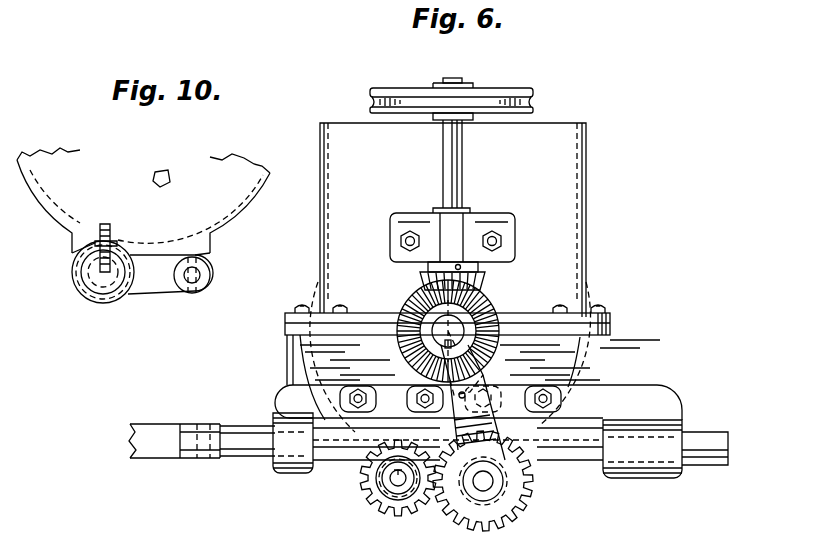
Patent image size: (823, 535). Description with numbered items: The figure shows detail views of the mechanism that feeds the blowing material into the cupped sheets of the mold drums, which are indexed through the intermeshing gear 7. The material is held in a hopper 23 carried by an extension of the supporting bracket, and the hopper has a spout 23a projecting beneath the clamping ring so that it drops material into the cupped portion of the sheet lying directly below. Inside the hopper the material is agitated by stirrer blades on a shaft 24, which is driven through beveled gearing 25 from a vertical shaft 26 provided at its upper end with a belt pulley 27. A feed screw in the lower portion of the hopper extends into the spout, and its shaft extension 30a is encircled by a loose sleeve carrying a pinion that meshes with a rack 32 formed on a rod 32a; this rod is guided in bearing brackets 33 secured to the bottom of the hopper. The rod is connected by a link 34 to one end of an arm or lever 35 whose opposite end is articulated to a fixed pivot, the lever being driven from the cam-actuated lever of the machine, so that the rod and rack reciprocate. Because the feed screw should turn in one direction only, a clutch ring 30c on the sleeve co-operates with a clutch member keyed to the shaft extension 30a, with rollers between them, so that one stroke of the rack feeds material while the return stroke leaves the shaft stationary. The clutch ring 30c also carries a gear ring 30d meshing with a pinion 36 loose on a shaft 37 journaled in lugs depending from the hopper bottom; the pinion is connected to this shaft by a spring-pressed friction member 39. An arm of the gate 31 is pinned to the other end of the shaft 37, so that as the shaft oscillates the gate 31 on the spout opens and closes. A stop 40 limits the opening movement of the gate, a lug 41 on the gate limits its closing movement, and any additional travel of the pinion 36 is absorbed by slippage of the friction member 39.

In FIG. 6, the intermeshing gear 7 is at (453, 95).
In FIG. 10, the hopper 23 is at (53, 167).
In FIG. 6, the hopper 23 is at (478, 277).
In FIG. 10, the spout 23a is at (75, 271).
In FIG. 6, the shaft 24 is at (458, 328).
In FIG. 6, the beveled gearing 25 is at (425, 280).
In FIG. 6, the shaft 26 is at (443, 178).
In FIG. 6, the pulley 27 is at (512, 92).
In FIG. 6, the shaft extension 30a is at (488, 482).
In FIG. 6, the clutch ring 30c is at (567, 9).
In FIG. 6, the gear ring 30d is at (520, 502).
In FIG. 10, the gate 31 is at (145, 278).
In FIG. 6, the rack 32 is at (514, 462).
In FIG. 6, the rod 32a is at (702, 437).
In FIG. 6, the bearing brackets 33 is at (278, 412).
In FIG. 6, the link 34 is at (155, 438).
In FIG. 6, the arm or lever 35 is at (452, 494).
In FIG. 6, the pinion 36 is at (384, 495).
In FIG. 10, the shaft 37 is at (197, 278).
In FIG. 6, the shaft 37 is at (392, 490).
In FIG. 6, the friction member 39 is at (368, 495).
In FIG. 10, the stop 40 is at (160, 172).
In FIG. 10, the lug 41 is at (117, 244).